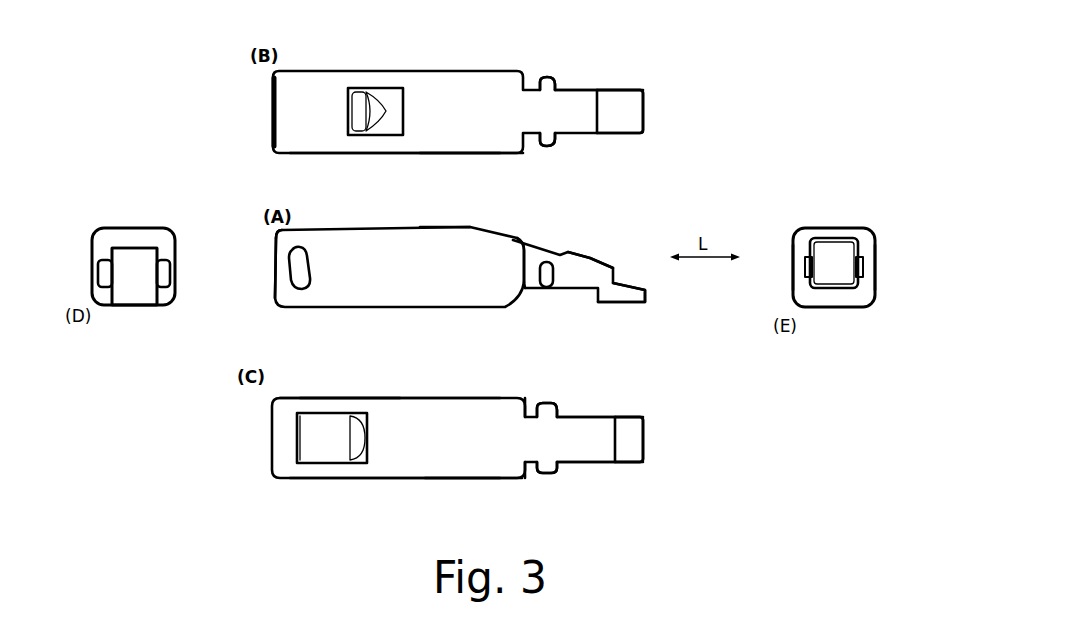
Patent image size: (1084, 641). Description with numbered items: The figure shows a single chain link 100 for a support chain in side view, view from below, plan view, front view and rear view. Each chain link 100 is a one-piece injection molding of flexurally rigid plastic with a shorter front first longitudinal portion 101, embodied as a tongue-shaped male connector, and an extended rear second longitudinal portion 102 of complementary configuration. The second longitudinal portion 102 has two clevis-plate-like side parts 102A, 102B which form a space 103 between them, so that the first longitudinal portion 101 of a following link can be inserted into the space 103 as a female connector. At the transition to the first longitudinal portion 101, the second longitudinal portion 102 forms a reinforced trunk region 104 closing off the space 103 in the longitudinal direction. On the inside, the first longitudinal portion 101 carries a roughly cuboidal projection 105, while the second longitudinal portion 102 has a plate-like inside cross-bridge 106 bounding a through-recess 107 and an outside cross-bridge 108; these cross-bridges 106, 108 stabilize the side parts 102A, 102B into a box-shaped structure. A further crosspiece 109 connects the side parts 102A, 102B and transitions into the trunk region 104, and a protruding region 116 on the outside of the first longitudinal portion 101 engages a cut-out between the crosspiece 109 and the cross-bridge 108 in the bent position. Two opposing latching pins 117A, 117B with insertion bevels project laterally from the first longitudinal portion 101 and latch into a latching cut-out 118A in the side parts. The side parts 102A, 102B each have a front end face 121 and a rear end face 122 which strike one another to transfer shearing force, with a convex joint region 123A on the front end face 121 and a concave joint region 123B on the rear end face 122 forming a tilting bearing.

The chain link 100 is at (720, 103).
The first longitudinal portion 101 is at (645, 60).
The second longitudinal portion 102 is at (507, 60).
The side part 102A is at (368, 490).
The side part 102B is at (330, 395).
The space 103 is at (847, 276).
The trunk region 104 is at (525, 152).
The projection 105 is at (628, 128).
The cross-bridge 106 is at (318, 126).
The recess 107 is at (392, 110).
The cross-bridge 108 is at (287, 440).
The crosspiece 109 is at (415, 454).
The protruding region 116 is at (595, 270).
The latching pin 117A is at (556, 84).
The latching pin 117B is at (547, 147).
The latching cut-out 118A is at (301, 262).
The front end face 121 is at (528, 298).
The rear end face 122 is at (268, 78).
The joint region 123A is at (511, 272).
The joint region 123B is at (268, 270).